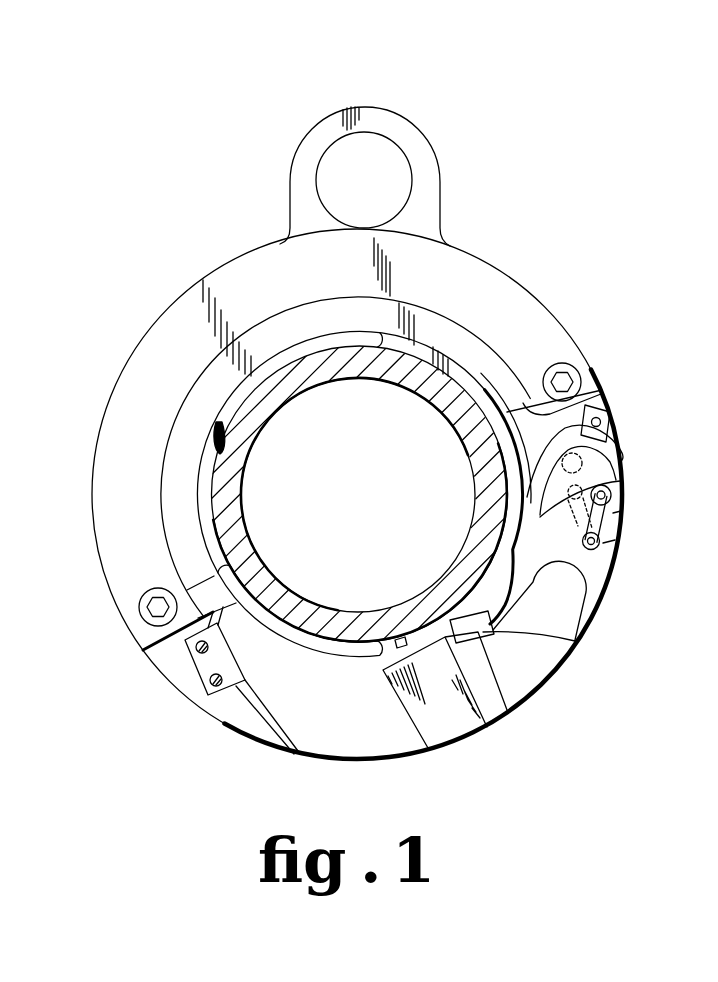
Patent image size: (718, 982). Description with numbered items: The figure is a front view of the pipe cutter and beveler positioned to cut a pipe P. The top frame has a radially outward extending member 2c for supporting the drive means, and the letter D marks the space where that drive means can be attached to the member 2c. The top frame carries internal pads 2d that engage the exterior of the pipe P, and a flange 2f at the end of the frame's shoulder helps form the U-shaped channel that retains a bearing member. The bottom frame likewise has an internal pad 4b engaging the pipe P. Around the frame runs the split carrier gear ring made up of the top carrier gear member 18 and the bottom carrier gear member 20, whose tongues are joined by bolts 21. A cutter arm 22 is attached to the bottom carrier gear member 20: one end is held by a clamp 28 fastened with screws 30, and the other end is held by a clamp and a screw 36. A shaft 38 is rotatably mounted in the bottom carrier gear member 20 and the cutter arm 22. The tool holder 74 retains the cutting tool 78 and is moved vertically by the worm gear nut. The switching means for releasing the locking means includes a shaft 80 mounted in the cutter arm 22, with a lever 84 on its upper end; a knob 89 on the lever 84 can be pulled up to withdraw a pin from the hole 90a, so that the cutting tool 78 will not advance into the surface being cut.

The radially outward extending member 2c is at (363, 117).
The drive means attachment space D is at (397, 158).
The top carrier gear member 18 is at (510, 281).
The flange 2f is at (244, 347).
The bolts 21 is at (578, 372).
The screw 36 is at (603, 410).
The shaft 38 is at (582, 461).
The hole 90a is at (582, 490).
The knob 89 is at (611, 499).
The lever 84 is at (603, 520).
The shaft 80 is at (599, 546).
The tool holder 74 is at (478, 630).
The cutter arm 22 is at (535, 673).
The cutting tool 78 is at (507, 708).
The internal pad 4b is at (403, 640).
The internal pads 2d is at (417, 350).
The pipe P is at (247, 554).
The screws 30 is at (193, 655).
The clamp 28 is at (204, 667).
The bottom carrier gear member 20 is at (246, 720).